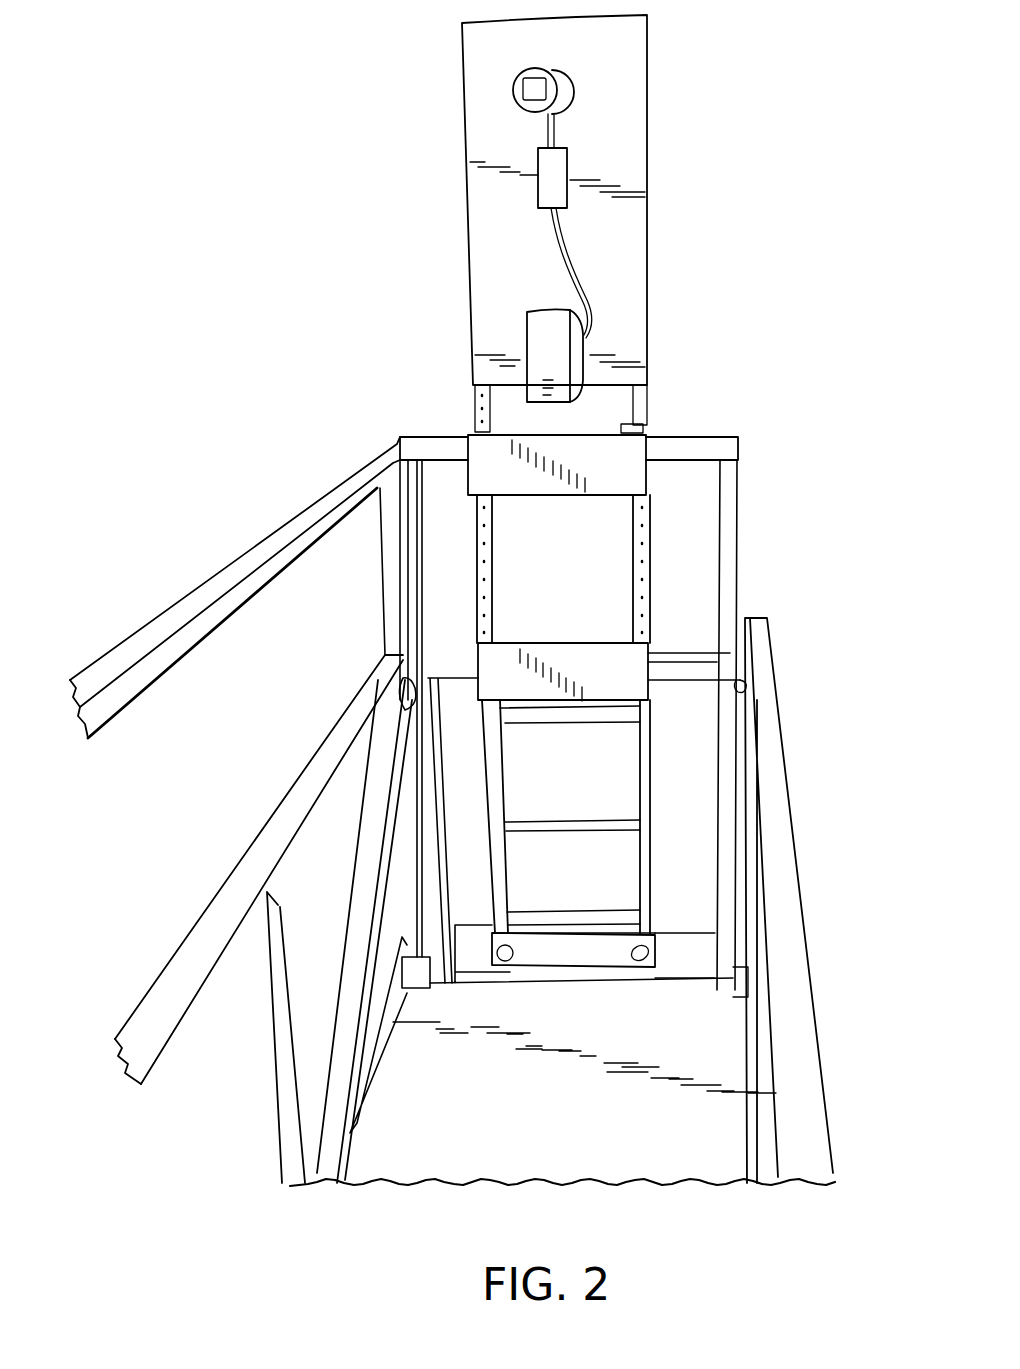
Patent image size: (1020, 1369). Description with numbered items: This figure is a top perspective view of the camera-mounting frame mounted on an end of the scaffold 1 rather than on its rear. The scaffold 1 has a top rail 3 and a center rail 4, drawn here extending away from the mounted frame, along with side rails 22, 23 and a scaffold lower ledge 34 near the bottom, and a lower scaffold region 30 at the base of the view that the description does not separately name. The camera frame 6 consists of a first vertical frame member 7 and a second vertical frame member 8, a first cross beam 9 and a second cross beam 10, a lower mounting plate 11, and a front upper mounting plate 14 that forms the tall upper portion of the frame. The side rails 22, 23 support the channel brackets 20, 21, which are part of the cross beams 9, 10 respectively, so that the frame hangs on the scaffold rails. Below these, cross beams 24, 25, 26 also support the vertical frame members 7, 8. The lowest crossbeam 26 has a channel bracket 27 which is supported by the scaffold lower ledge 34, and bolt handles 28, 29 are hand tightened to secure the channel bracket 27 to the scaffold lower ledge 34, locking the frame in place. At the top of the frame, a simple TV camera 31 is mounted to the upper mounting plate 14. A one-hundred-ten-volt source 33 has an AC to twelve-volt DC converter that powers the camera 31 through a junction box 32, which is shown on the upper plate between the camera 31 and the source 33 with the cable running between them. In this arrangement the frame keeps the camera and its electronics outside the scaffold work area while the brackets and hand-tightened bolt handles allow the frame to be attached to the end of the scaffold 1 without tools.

The scaffold 1 is at (343, 449).
The rear top rail 3 is at (253, 551).
The rear center rail 4 is at (268, 803).
The camera frame 6 is at (666, 30).
The first vertical frame member 7 is at (656, 406).
The second vertical frame member 8 is at (471, 406).
The first cross beam 9 is at (648, 427).
The second cross beam 10 is at (653, 626).
The lower mounting plate 11 is at (583, 803).
The front upper mounting plate 14 is at (634, 304).
The channel bracket 20 is at (626, 466).
The channel bracket 21 is at (640, 681).
The side rail 22 is at (720, 453).
The side rail 23 is at (697, 679).
The cross beam 24 is at (628, 716).
The cross beam 25 is at (622, 833).
The cross beam 26 is at (627, 917).
The channel bracket 27 is at (581, 962).
The bolt handle 28 is at (507, 962).
The bolt handle 29 is at (690, 990).
The side wall 30 is at (712, 1167).
The TV camera 31 is at (565, 92).
The junction box 32 is at (558, 186).
The 110V source 33 is at (556, 342).
The scaffold lower ledge 34 is at (692, 961).